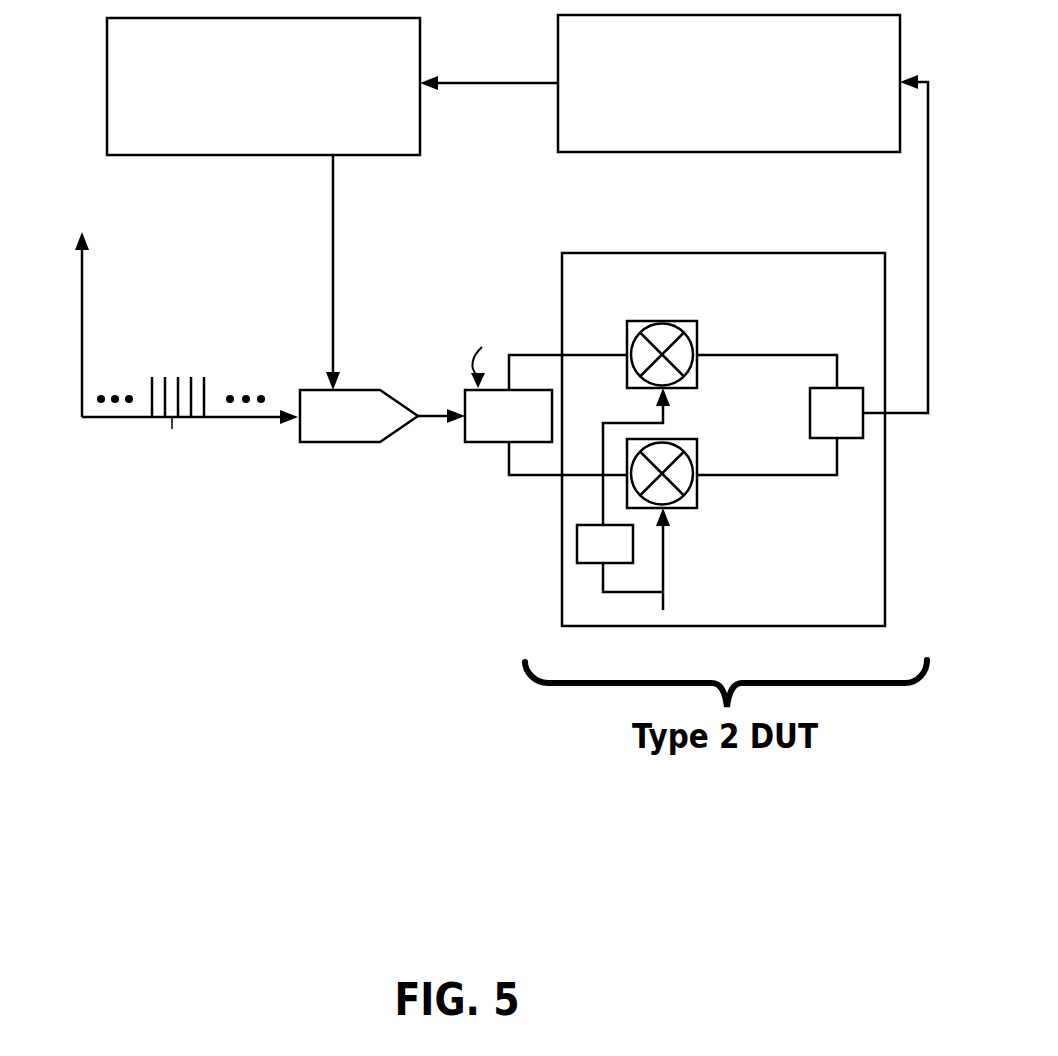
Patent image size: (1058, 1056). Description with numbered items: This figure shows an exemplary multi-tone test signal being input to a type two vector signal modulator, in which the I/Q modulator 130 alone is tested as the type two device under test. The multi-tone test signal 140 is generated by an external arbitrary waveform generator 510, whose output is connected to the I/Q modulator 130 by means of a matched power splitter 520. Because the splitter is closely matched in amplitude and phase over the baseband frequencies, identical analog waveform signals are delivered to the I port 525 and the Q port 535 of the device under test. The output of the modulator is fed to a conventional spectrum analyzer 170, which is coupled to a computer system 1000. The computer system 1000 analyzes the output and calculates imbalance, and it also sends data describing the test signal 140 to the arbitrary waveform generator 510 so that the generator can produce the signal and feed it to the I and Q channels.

The computer system 1000 is at (290, 99).
The spectrum analyzer 170 is at (708, 93).
The multi-tone test signal 140 is at (189, 300).
The arbitrary waveform generator 510 is at (398, 427).
The matched power splitter 520 is at (508, 318).
The I port 525 is at (590, 355).
The Q port 535 is at (575, 473).
The I/Q modulator 130 is at (808, 579).